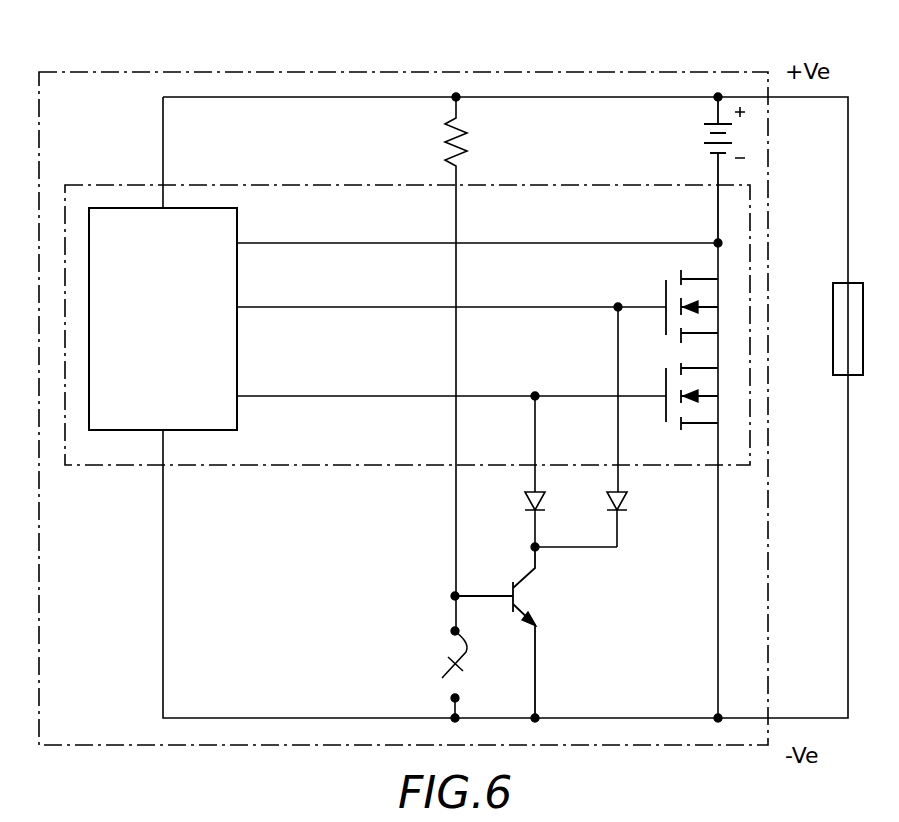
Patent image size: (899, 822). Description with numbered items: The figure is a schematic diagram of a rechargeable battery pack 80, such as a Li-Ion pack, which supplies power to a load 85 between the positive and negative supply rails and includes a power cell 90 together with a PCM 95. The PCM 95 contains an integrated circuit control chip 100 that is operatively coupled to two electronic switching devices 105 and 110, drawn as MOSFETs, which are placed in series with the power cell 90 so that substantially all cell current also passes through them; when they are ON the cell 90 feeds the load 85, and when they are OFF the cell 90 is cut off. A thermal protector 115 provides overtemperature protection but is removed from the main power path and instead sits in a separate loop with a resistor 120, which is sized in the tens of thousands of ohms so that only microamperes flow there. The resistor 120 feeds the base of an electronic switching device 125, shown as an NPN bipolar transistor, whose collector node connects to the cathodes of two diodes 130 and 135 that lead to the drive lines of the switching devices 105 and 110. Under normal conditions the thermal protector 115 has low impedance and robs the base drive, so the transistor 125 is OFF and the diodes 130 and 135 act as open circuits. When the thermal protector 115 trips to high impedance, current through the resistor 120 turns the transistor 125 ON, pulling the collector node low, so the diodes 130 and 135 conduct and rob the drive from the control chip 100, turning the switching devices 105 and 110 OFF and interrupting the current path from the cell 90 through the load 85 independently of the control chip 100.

The rechargeable battery pack 80 is at (387, 72).
The load 85 is at (833, 296).
The power cell 90 is at (704, 131).
The PCM 95 is at (390, 182).
The integrated circuit control chip 100 is at (238, 233).
The electronic switching device 105 is at (666, 283).
The electronic switching device 110 is at (666, 410).
The thermal protector 115 is at (442, 678).
The resistor 120 is at (466, 144).
The electronic switching device 125 is at (528, 574).
The diode 130 is at (525, 493).
The diode 135 is at (628, 494).